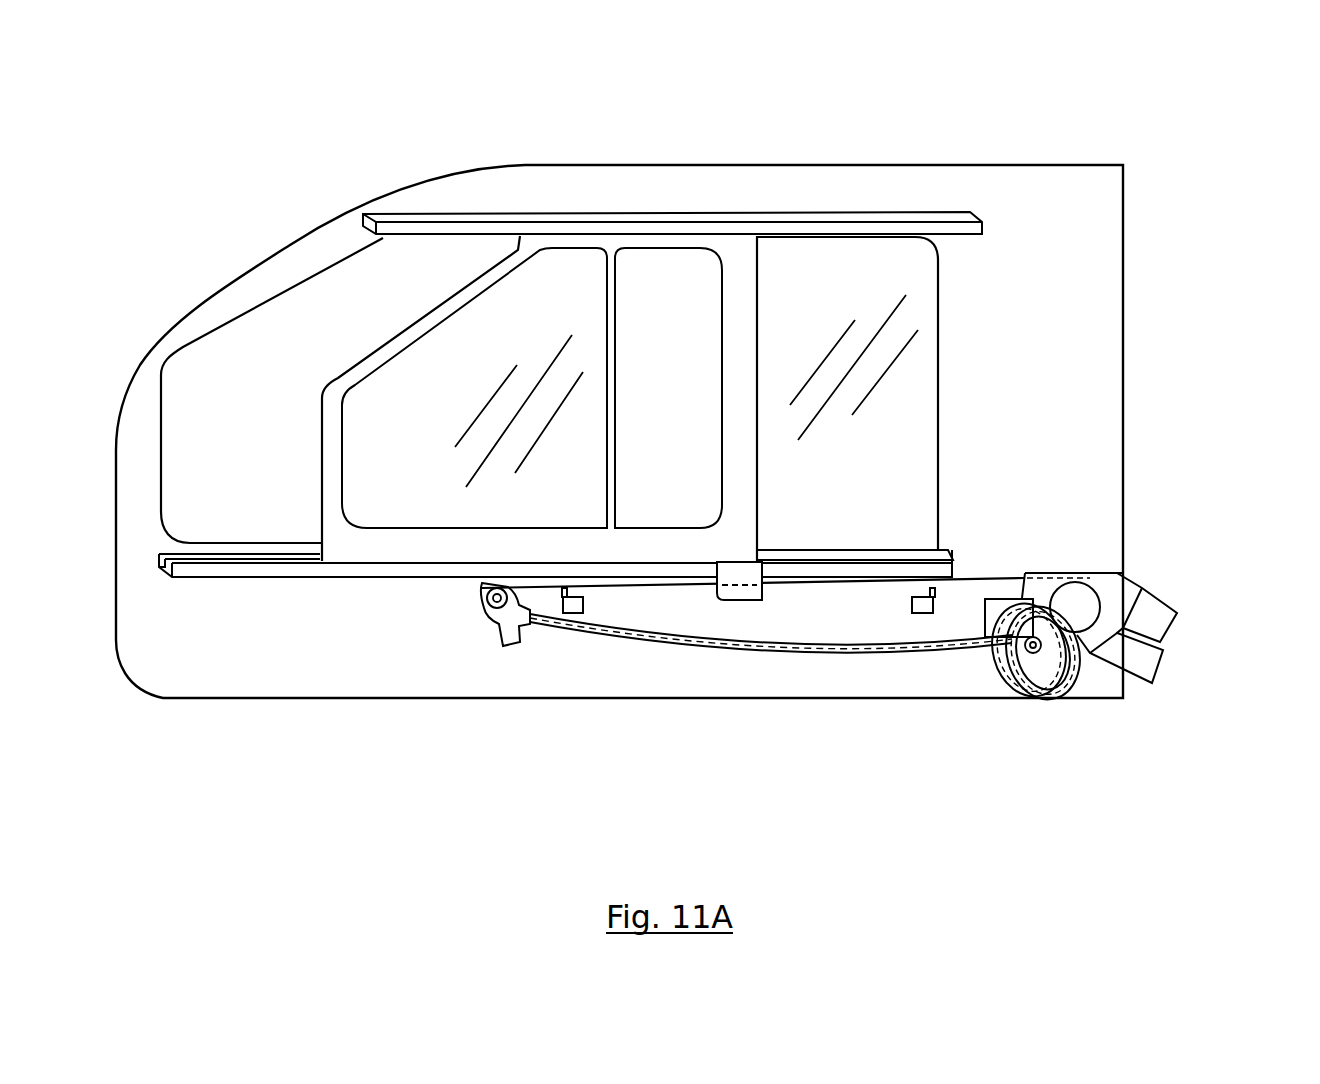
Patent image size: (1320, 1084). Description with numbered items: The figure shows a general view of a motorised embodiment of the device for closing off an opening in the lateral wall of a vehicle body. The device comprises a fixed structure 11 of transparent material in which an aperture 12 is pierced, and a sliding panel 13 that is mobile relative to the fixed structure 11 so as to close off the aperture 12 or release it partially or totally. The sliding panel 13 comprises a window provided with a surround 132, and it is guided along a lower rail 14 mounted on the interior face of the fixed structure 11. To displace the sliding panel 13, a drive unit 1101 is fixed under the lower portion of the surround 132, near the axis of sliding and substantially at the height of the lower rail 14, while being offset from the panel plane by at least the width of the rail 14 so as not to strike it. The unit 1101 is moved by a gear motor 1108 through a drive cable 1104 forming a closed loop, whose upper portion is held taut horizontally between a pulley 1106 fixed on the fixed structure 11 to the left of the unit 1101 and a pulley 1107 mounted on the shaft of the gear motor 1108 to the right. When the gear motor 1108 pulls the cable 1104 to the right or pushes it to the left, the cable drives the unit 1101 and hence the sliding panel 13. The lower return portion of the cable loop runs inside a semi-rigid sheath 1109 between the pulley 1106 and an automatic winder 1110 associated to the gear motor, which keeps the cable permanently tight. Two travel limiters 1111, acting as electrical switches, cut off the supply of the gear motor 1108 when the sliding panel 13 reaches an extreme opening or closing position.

The fixed structure 11 is at (968, 187).
The aperture 12 is at (250, 393).
The sliding panel 13 is at (400, 385).
The surround 132 is at (727, 250).
The lower rail 14 is at (257, 572).
The drive unit 1101 is at (740, 599).
The drive cable 1104 is at (653, 589).
The pulley 1106 is at (492, 618).
The pulley 1107 is at (1078, 597).
The gear motor 1108 is at (1145, 613).
The semi-rigid sheath 1109 is at (823, 657).
The automatic winder 1110 is at (1040, 695).
The travel limiters 1111 is at (575, 605).